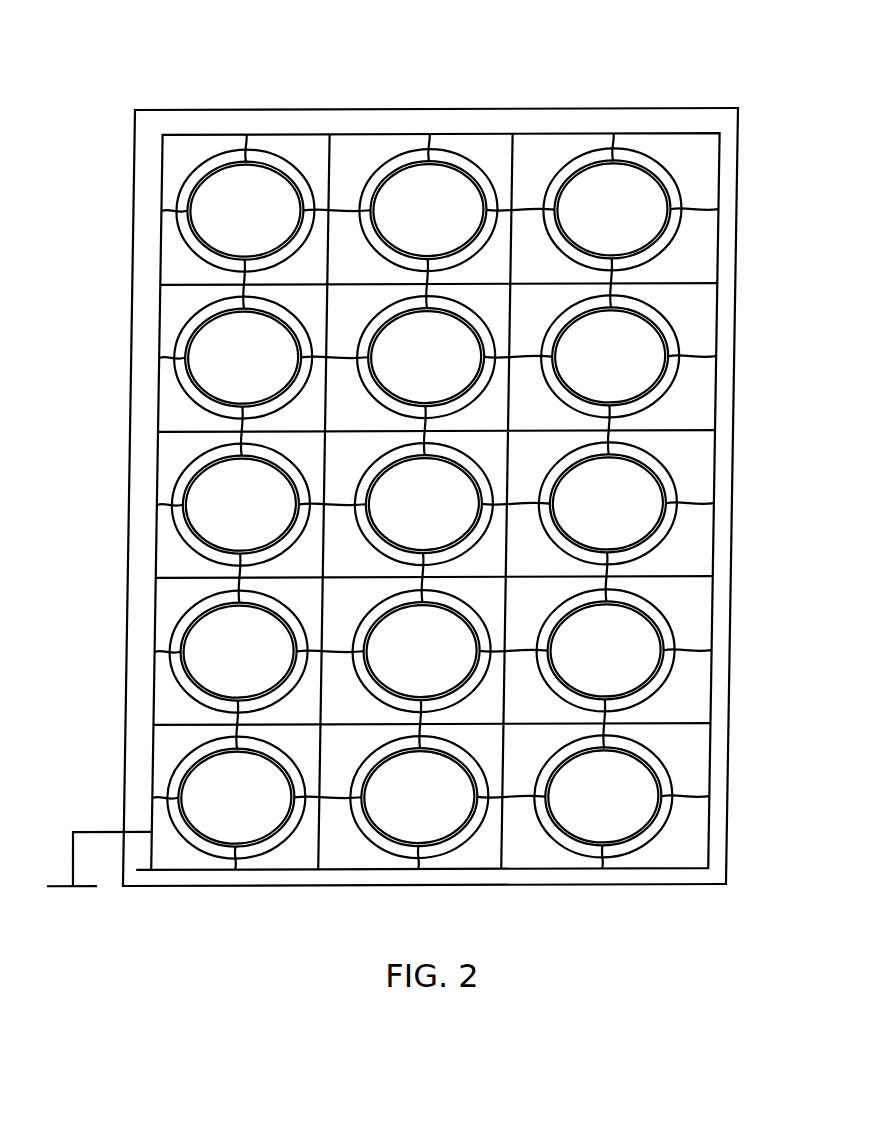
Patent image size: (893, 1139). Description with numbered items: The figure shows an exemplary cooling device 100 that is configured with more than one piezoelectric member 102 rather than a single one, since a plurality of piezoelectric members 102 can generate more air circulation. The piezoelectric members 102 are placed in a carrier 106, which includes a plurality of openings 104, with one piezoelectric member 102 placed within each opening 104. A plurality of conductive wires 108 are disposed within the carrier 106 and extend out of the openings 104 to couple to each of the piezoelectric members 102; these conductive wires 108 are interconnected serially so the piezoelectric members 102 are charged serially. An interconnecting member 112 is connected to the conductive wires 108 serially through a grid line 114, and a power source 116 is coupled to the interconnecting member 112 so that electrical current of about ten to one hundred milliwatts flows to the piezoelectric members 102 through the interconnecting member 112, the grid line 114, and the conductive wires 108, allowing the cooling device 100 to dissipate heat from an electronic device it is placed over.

The cooling device 100 is at (329, 72).
The piezoelectric member 102 is at (629, 222).
The opening 104 is at (455, 160).
The carrier 106 is at (643, 123).
The conductive wire 108 is at (680, 200).
The interconnecting member 112 is at (95, 830).
The grid line 114 is at (160, 400).
The power source 116 is at (60, 888).